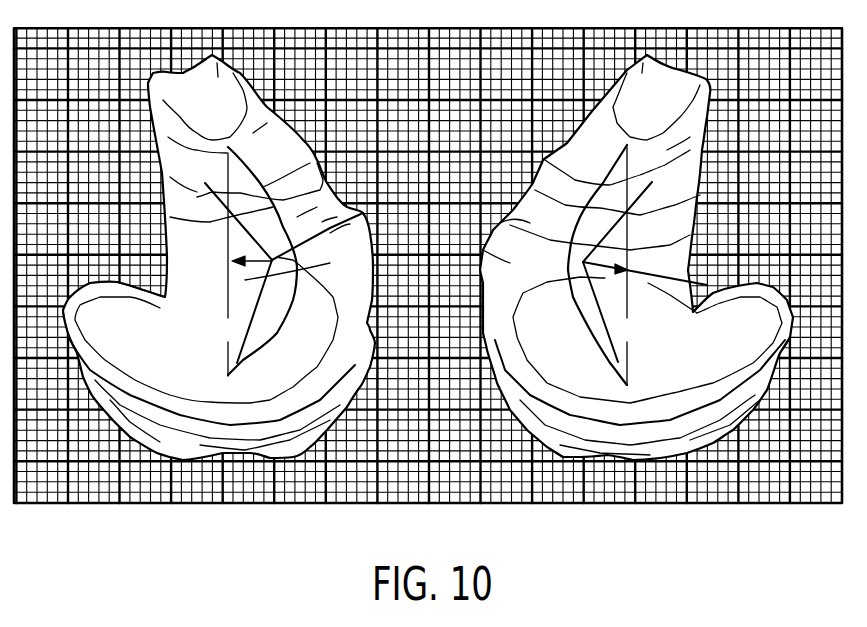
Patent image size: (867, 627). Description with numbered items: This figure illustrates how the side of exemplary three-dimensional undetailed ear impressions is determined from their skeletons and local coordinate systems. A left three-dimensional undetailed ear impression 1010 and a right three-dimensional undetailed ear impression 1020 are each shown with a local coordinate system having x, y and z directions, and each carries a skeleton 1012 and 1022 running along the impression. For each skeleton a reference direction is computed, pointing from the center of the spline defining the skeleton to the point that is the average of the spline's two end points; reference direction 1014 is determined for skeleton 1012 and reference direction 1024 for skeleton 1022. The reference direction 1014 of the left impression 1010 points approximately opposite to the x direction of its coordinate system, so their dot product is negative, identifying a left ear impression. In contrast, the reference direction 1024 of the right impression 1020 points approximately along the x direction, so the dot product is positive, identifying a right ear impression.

The left 3D undetailed ear impression 1010 is at (222, 110).
The skeleton 1012 is at (262, 177).
The reference direction 1014 is at (173, 307).
The right 3D undetailed ear impression 1020 is at (672, 111).
The skeleton 1022 is at (595, 177).
The reference direction 1024 is at (688, 306).